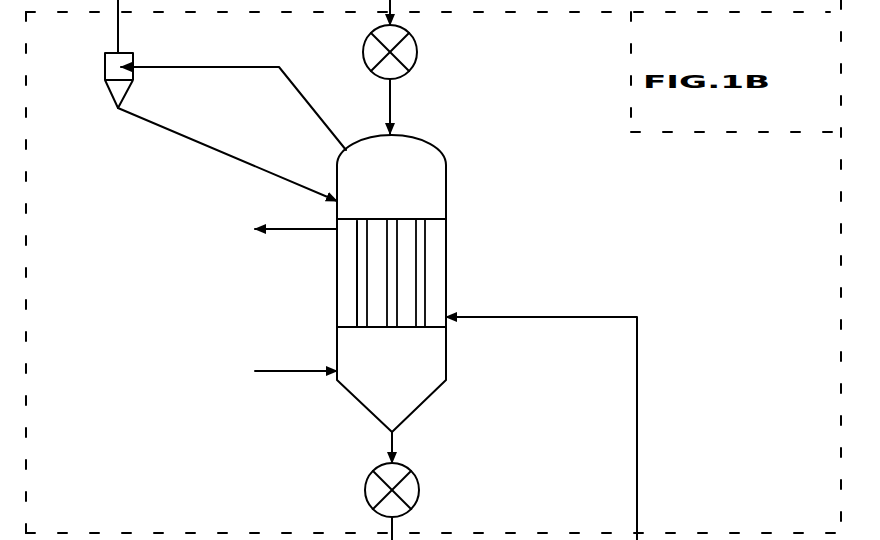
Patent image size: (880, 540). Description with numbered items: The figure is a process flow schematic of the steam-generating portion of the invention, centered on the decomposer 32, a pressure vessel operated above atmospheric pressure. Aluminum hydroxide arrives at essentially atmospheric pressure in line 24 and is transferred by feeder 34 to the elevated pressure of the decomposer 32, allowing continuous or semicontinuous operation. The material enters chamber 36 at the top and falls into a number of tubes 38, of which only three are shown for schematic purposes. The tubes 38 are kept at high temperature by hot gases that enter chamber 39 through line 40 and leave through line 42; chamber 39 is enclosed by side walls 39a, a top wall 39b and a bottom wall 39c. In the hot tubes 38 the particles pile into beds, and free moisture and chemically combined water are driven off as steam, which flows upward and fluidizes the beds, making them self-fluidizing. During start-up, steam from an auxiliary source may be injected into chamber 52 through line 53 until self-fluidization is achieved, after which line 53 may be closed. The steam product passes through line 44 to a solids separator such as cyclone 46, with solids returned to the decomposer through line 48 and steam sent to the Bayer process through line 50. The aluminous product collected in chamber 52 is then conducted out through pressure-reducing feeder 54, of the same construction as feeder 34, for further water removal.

The line 24 is at (396, 24).
The feeder 34 is at (417, 63).
The decomposer 32 is at (439, 144).
The chamber 36 is at (402, 178).
The chamber 52 is at (405, 391).
The chamber 39 is at (437, 233).
The side walls 39a is at (446, 268).
The top wall 39b is at (400, 218).
The bottom wall 39c is at (380, 329).
The tubes 38 is at (357, 272).
The line 42 is at (290, 228).
The line 50 is at (118, 33).
The cyclone 46 is at (105, 62).
The line 44 is at (305, 96).
The line 48 is at (197, 139).
The line 40 is at (609, 315).
The line 53 is at (307, 373).
The pressure-reducing feeder 54 is at (420, 491).